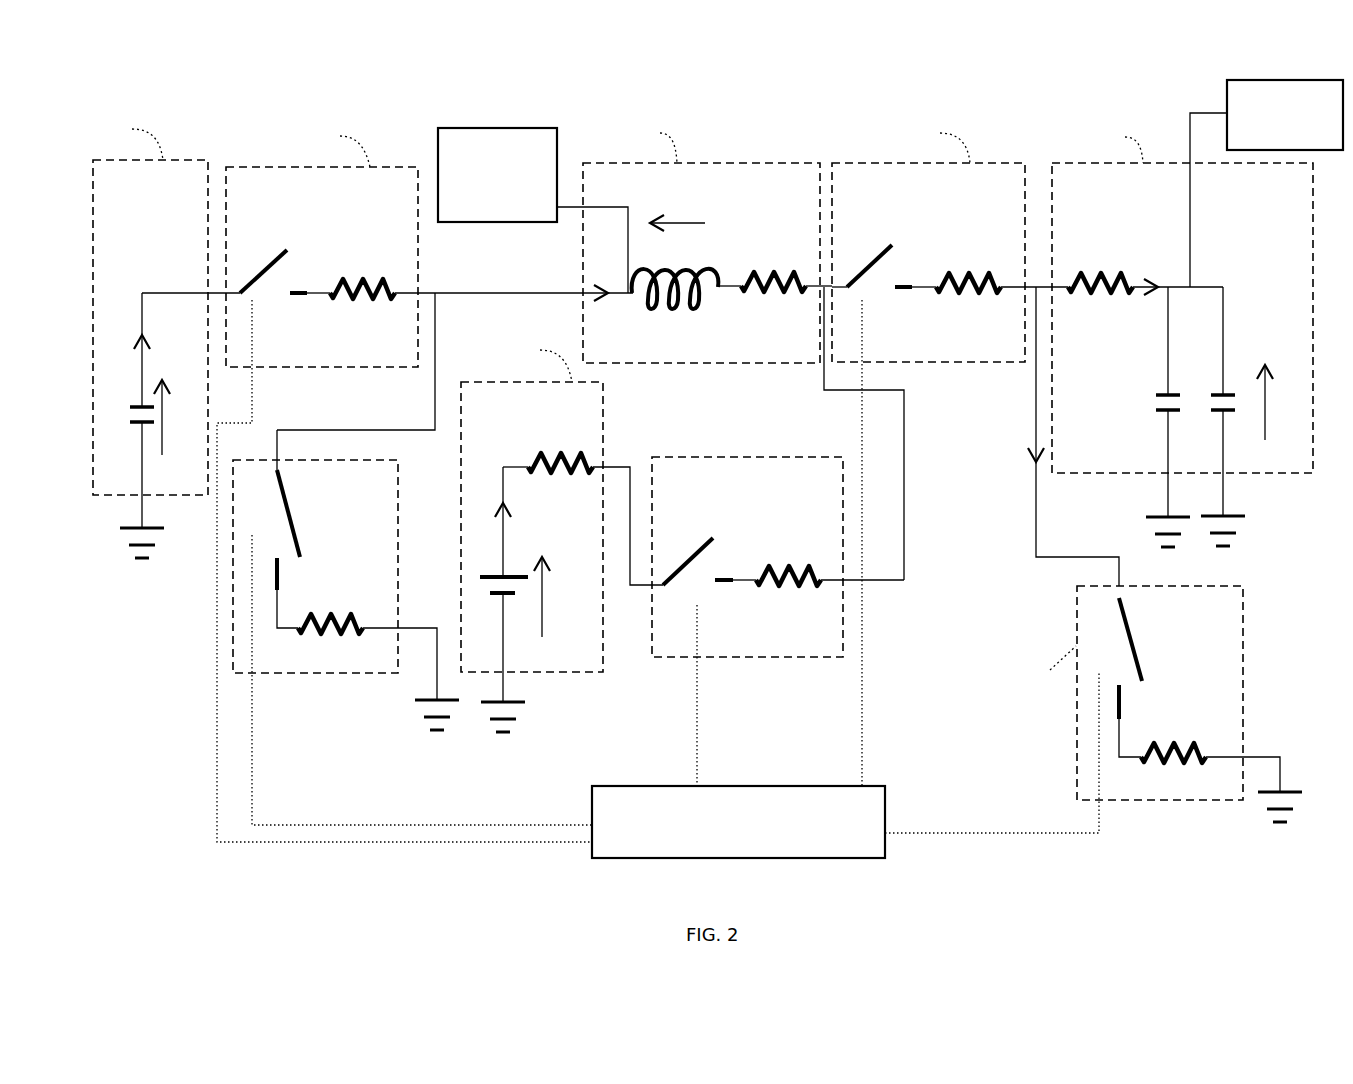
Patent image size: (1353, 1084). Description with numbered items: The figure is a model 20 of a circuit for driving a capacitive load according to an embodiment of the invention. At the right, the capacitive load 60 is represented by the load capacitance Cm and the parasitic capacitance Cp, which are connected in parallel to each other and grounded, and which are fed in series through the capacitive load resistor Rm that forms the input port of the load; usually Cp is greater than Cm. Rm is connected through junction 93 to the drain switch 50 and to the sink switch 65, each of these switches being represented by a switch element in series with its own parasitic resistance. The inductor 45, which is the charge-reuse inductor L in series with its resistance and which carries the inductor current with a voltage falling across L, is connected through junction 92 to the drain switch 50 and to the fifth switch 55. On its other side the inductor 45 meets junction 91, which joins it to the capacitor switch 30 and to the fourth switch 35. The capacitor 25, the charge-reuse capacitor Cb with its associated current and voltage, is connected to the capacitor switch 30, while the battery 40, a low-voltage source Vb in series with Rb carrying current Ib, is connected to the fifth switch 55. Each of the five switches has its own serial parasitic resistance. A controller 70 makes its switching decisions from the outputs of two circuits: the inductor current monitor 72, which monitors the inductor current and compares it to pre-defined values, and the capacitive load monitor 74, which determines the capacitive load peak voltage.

The model 20 is at (291, 866).
The capacitor 25 is at (133, 207).
The capacitor switch 30 is at (264, 207).
The fourth switch 35 is at (375, 501).
The battery 40 is at (499, 422).
The inductor 45 is at (806, 200).
The drain switch 50 is at (1009, 199).
The fifth switch 55 is at (821, 493).
The capacitive load 60 is at (1292, 210).
The sink switch 65 is at (1230, 637).
The controller 70 is at (826, 833).
The inductor current monitor 72 is at (533, 210).
The capacitive load monitor 74 is at (1266, 183).
The junction 91 is at (433, 290).
The junction 92 is at (822, 287).
The junction 93 is at (1034, 290).